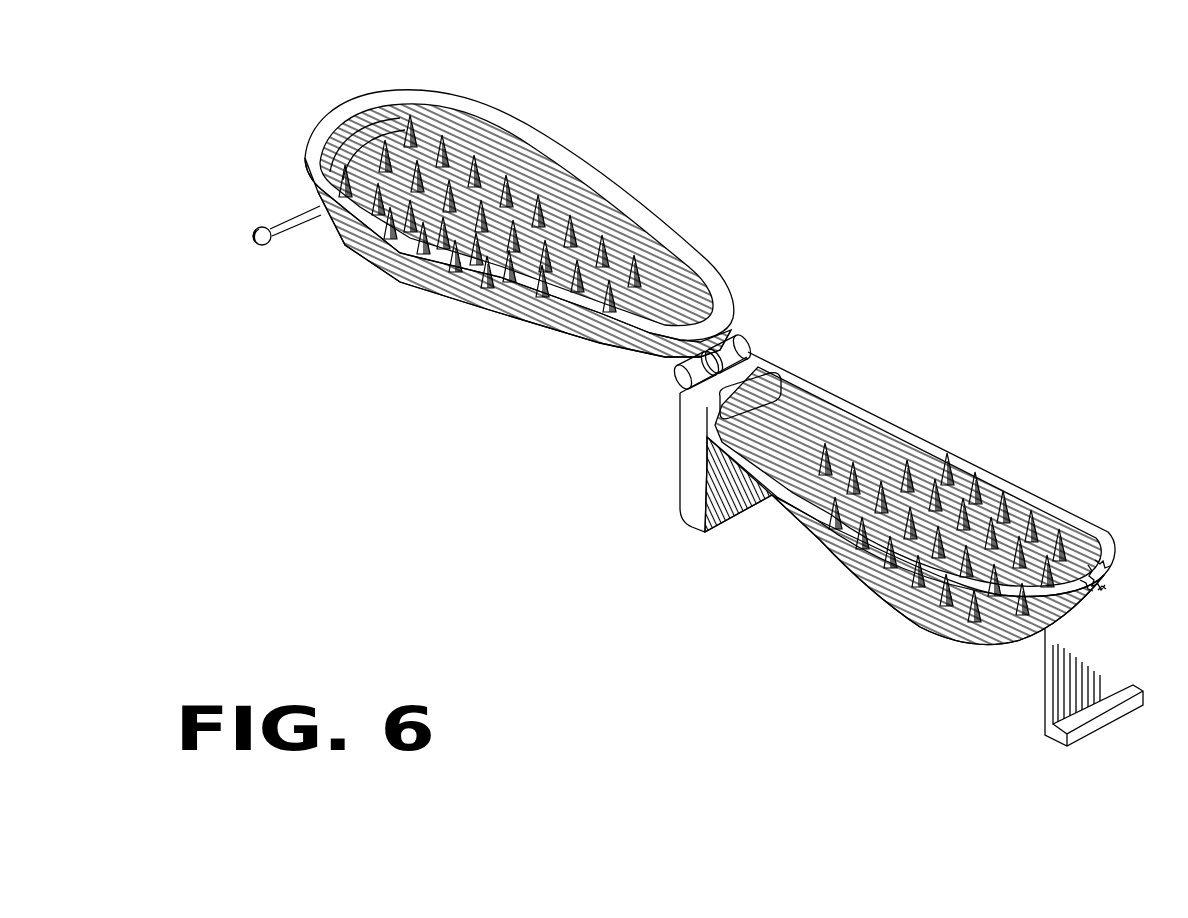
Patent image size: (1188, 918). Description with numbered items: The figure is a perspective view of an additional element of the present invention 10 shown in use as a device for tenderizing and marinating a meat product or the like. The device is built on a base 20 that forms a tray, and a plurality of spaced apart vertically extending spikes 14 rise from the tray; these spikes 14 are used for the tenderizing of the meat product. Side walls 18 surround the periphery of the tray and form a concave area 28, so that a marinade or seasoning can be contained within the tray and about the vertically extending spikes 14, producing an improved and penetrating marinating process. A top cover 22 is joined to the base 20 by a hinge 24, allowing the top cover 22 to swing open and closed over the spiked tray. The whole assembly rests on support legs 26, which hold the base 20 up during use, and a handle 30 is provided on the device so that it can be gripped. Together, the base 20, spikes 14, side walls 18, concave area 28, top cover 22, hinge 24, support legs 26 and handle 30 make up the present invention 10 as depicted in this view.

The present invention 10 is at (956, 231).
The spikes 14 is at (875, 438).
The side walls 18 is at (992, 468).
The base 20 is at (1103, 582).
The top cover 22 is at (633, 233).
The hinge 24 is at (676, 381).
The support legs 26 is at (724, 488).
The concave area 28 is at (1068, 512).
The handle 30 is at (262, 246).